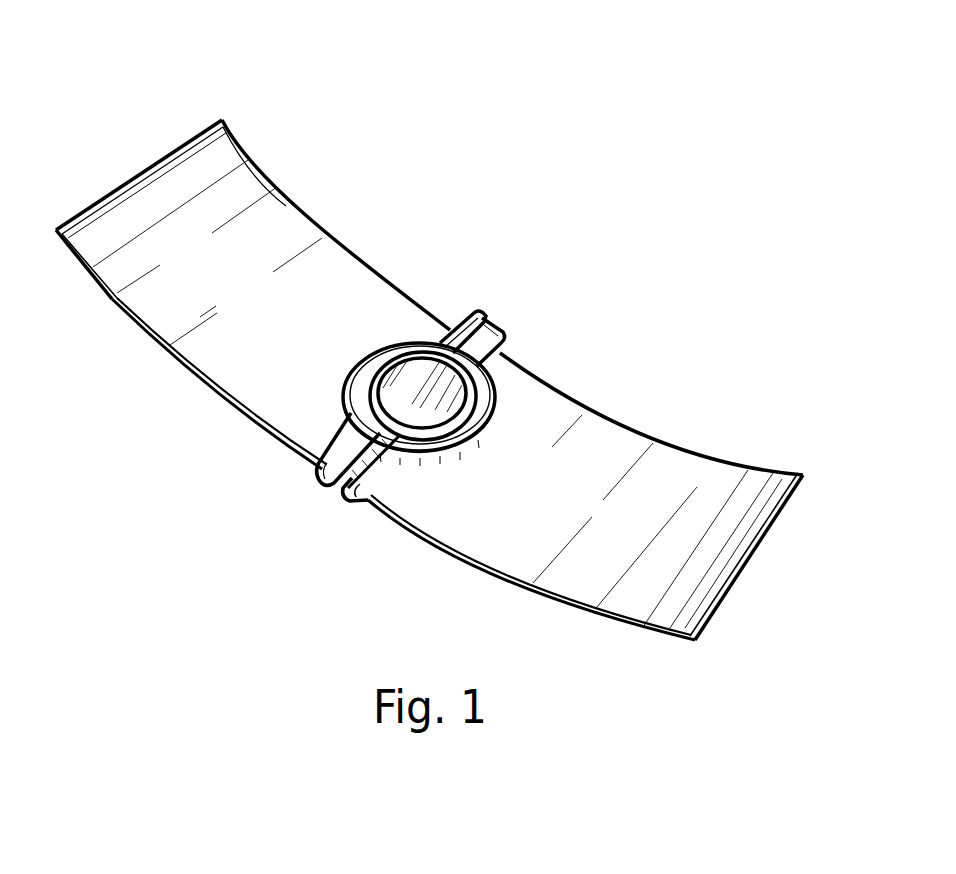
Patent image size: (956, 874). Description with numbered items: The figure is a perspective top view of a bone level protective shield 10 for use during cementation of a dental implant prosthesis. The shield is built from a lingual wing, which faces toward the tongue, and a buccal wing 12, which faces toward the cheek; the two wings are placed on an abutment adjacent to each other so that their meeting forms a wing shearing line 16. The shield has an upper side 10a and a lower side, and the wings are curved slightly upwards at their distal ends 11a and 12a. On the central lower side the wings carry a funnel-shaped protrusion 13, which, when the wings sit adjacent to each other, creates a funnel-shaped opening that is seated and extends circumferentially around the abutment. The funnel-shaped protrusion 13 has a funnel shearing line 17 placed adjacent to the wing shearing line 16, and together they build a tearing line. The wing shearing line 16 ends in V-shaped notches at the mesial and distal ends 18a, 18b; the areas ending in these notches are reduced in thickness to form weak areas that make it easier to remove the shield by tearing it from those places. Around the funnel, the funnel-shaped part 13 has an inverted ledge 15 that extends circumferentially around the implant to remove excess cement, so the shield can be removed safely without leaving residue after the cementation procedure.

The bone level protective shield 10 is at (105, 108).
The upper side 10a is at (281, 222).
The distal end of lingual wing 11a is at (167, 293).
The buccal wing 12 is at (685, 490).
The distal end of buccal wing 12a is at (700, 570).
The funnel-shaped protrusion 13 is at (477, 377).
The inverted ledge 15 is at (490, 400).
The wing shearing line 16 is at (477, 318).
The funnel shearing line 17 is at (425, 388).
The mesial end V-shaped notch 18a is at (345, 488).
The distal end V-shaped notch 18b is at (492, 333).